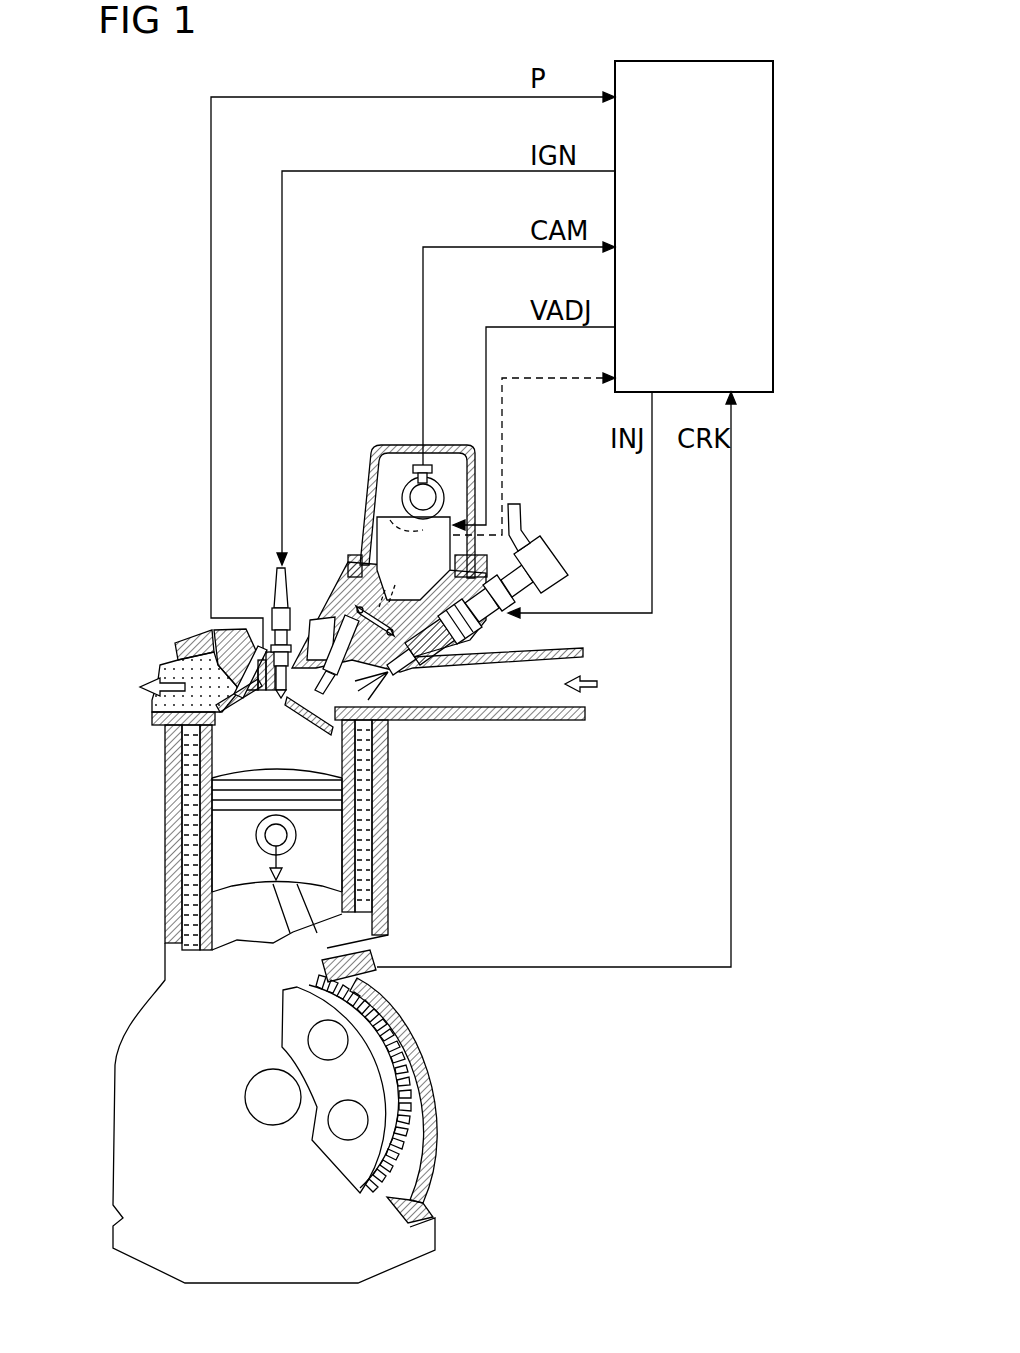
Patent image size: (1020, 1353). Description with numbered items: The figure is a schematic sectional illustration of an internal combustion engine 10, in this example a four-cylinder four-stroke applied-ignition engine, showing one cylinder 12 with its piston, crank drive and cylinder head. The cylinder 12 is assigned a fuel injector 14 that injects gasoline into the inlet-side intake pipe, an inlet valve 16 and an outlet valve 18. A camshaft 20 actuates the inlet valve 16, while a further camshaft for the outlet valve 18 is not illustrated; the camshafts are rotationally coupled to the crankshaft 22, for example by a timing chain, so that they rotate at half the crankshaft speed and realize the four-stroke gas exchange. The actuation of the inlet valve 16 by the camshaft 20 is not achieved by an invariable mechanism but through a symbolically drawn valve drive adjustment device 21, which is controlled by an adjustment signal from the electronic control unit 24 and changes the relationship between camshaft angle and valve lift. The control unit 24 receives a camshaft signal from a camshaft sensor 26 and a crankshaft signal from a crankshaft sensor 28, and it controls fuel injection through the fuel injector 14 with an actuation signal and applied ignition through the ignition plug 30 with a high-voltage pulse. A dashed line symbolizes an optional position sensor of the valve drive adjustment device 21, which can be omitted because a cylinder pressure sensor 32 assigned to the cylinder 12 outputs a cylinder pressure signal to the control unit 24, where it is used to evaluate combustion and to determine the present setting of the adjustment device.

The internal combustion engine 10 is at (150, 589).
The cylinder 12 is at (220, 752).
The fuel injector 14 is at (408, 674).
The inlet valve 16 is at (312, 716).
The outlet valve 18 is at (236, 716).
The camshaft 20 is at (437, 472).
The valve drive adjustment device 21 is at (378, 545).
The crankshaft 22 is at (277, 1116).
The electronic control unit 24 is at (700, 60).
The camshaft sensor 26 is at (415, 463).
The crankshaft sensor 28 is at (372, 960).
The ignition plug 30 is at (291, 618).
The cylinder pressure sensor 32 is at (262, 694).